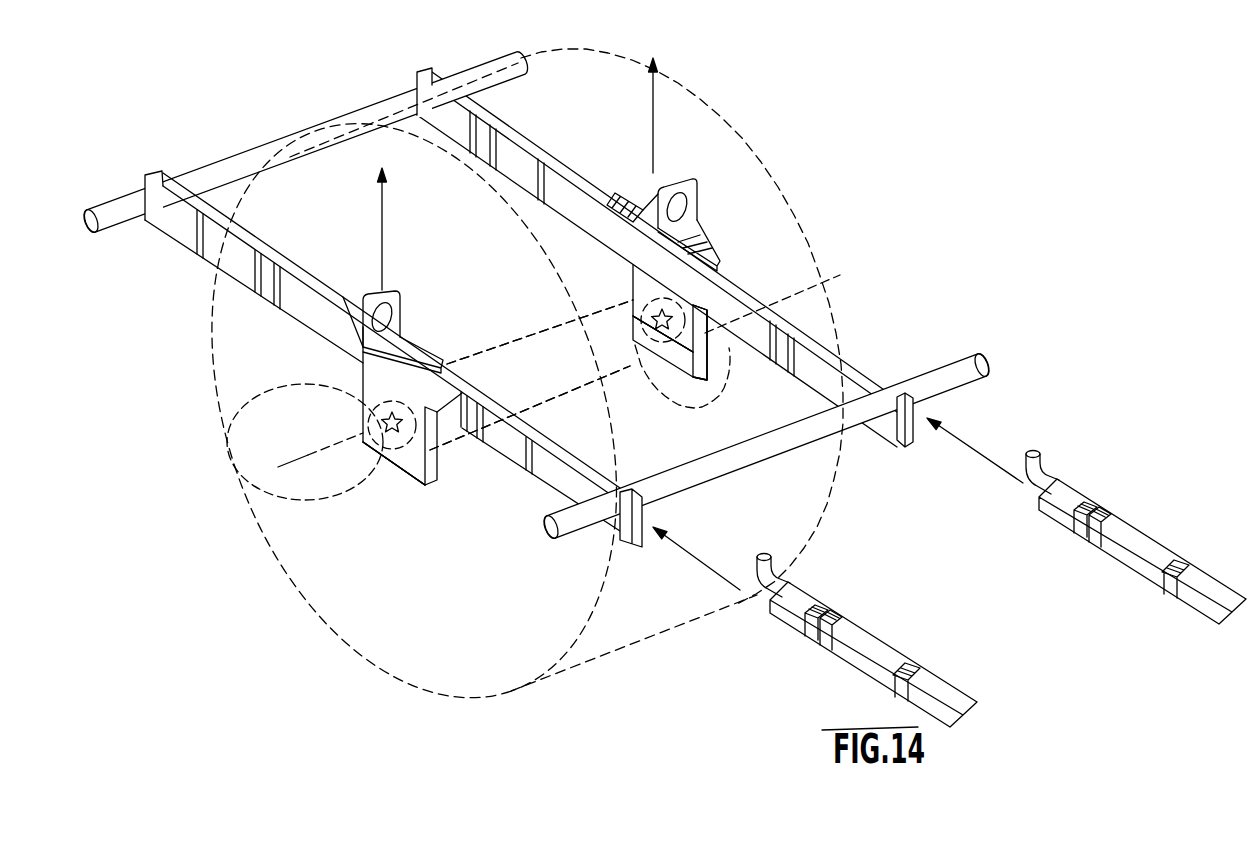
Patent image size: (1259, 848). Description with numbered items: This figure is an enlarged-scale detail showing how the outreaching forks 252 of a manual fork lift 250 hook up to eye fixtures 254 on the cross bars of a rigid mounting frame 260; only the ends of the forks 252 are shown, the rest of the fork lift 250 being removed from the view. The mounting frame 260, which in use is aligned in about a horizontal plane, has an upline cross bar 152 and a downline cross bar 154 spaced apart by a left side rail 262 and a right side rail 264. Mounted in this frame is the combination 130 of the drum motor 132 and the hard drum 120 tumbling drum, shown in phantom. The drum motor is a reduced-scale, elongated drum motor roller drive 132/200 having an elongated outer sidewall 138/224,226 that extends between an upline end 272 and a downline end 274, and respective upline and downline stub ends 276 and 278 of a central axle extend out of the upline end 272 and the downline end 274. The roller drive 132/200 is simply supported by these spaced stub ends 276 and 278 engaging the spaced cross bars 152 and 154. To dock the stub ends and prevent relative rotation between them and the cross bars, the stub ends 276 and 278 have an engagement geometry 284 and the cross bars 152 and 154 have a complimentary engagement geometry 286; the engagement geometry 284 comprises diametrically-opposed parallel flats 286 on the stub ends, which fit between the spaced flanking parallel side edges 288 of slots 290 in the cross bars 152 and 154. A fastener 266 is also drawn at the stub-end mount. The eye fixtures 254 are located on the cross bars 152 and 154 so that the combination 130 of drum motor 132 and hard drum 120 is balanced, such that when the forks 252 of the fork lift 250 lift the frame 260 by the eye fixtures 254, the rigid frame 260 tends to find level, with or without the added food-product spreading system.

The hard drum 120 is at (715, 112).
The combination 130 is at (722, 72).
The drum motor 132 is at (546, 312).
The drum motor roller drive 200 is at (546, 302).
The elongated outer sidewall 138 is at (807, 313).
The elongated outer sidewall 224 is at (807, 313).
The elongated outer sidewall 226 is at (807, 313).
The upline cross bar 152 is at (820, 363).
The downline cross bar 154 is at (195, 240).
The manual fork lift 250 is at (1102, 498).
The forks 252 is at (1103, 538).
The eye fixtures 254 is at (656, 228).
The rigid mounting frame 260 is at (933, 367).
The left side rail 262 is at (968, 365).
The right side rail 264 is at (457, 73).
The fastener 266 is at (305, 458).
The upline end 272 is at (707, 312).
The downline end 274 is at (247, 393).
The upline stub end 276 is at (706, 332).
The downline stub end 278 is at (260, 473).
The engagement geometry 284 is at (400, 460).
The parallel side edges 288 is at (400, 460).
The slots 290 is at (400, 460).
The complimentary engagement geometry 286 is at (634, 268).